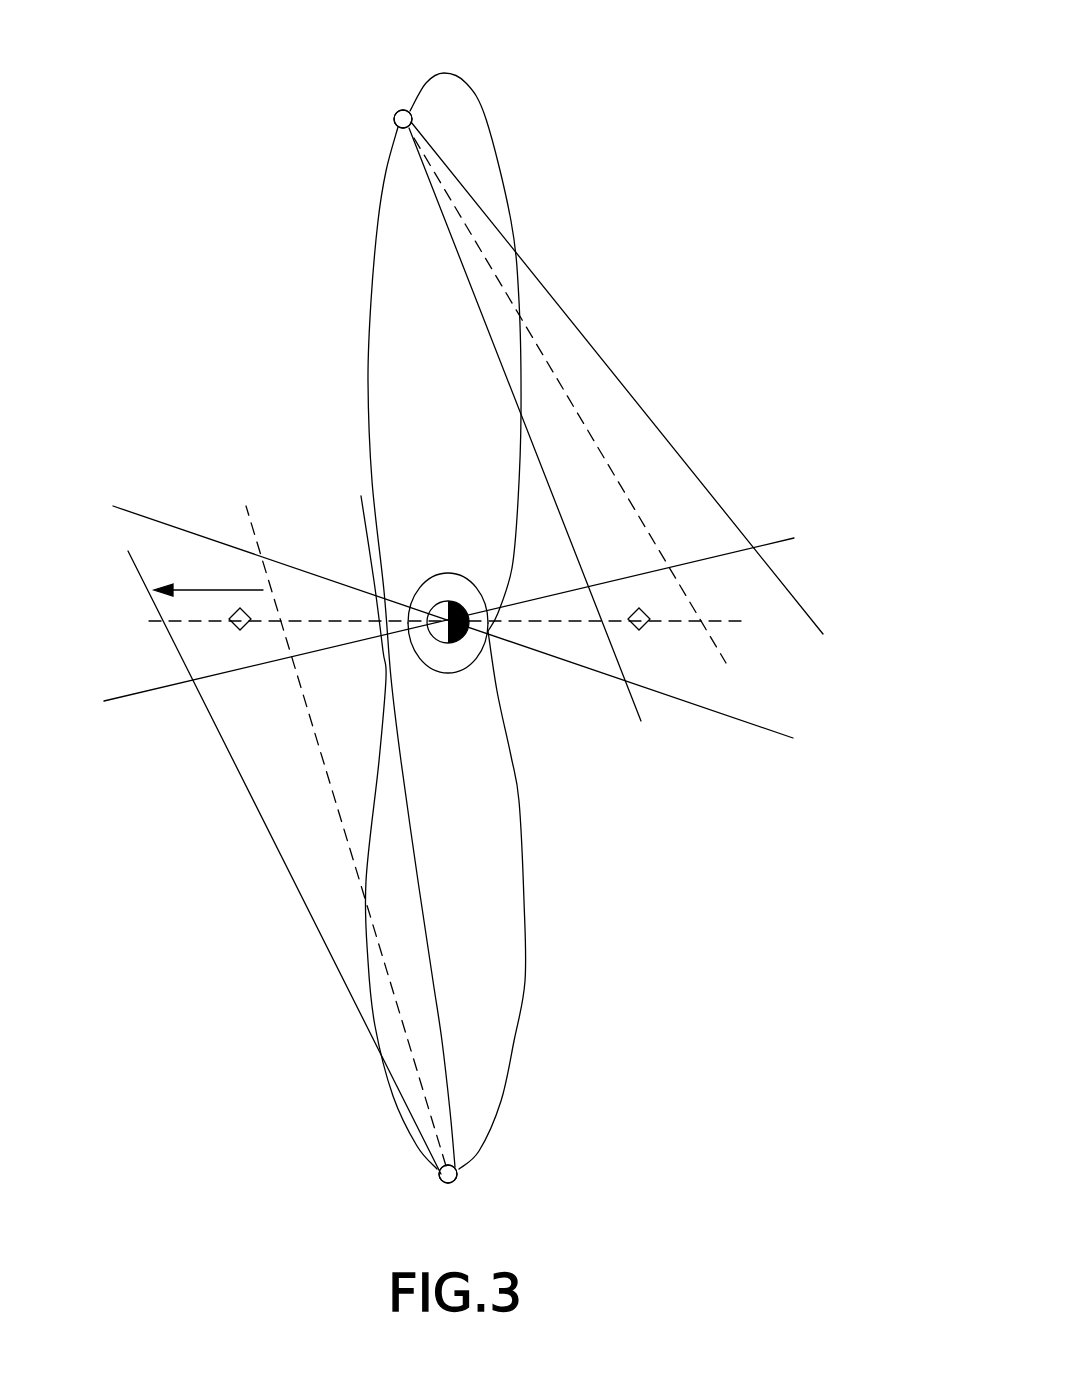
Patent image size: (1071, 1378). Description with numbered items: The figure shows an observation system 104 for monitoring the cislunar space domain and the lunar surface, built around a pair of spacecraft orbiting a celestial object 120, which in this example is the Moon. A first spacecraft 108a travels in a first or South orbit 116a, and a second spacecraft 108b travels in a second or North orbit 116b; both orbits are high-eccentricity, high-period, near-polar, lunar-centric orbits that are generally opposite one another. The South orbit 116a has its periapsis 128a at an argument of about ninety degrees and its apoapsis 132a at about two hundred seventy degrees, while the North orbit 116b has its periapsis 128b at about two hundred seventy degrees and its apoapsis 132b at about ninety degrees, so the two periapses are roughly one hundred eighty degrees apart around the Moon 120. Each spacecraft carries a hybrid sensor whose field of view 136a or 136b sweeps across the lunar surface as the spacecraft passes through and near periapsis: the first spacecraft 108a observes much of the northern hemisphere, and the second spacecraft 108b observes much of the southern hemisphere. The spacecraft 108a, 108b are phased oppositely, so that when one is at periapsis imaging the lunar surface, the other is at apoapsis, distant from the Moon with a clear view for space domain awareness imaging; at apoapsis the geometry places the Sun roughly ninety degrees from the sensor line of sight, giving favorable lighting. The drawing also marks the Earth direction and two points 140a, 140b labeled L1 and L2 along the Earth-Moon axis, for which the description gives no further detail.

The observation system 104 is at (606, 41).
The first spacecraft 108a is at (456, 1176).
The second spacecraft 108b is at (394, 122).
The first orbit 116a is at (524, 988).
The second orbit 116b is at (504, 184).
The celestial object 120 is at (457, 640).
The periapsis of the first orbit 128a is at (452, 572).
The periapsis of the second orbit 128b is at (443, 675).
The apoapsis of the first orbit 132a is at (456, 1166).
The apoapsis of the second orbit 132b is at (404, 108).
The field of view of the first spacecraft's hybrid sensor 136a is at (272, 846).
The field of view of the second spacecraft's hybrid sensor 136b is at (680, 453).
The first Lagrange point L1 140a is at (232, 626).
The second Lagrange point L2 140b is at (649, 622).